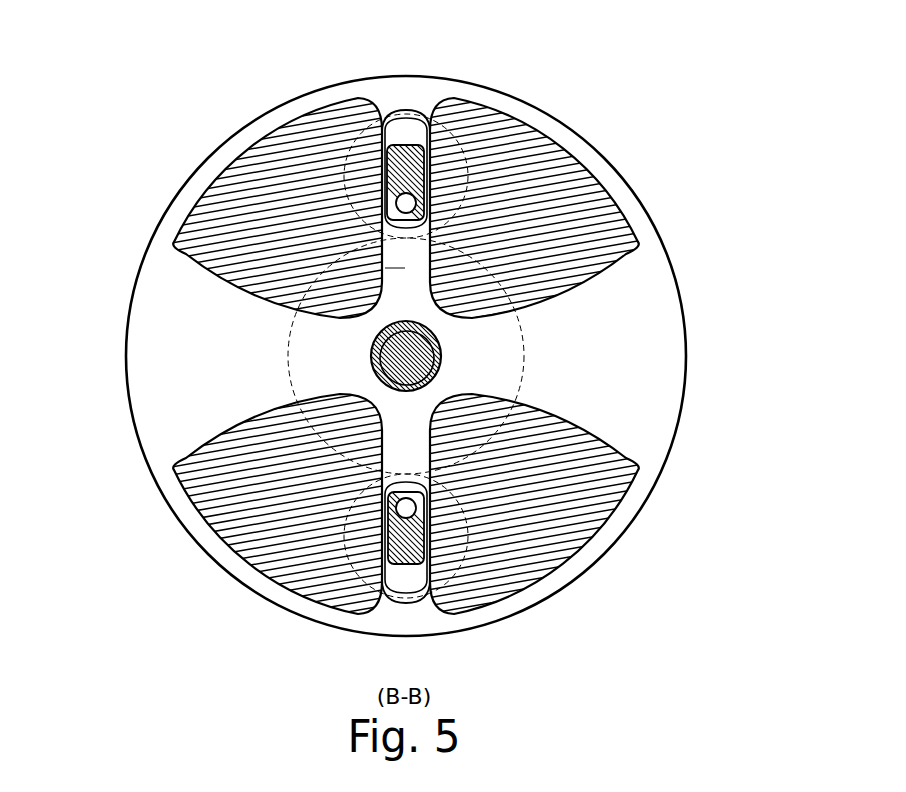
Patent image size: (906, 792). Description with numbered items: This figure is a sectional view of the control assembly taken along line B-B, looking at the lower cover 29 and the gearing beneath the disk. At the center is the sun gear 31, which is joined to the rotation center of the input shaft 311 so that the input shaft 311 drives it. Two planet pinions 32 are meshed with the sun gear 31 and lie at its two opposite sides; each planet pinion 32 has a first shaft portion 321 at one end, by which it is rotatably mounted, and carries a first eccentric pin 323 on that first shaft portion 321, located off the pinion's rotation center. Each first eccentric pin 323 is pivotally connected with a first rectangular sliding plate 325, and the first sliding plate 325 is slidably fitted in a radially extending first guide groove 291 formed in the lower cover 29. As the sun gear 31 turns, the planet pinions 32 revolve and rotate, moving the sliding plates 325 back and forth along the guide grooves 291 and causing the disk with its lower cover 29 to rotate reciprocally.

The lower cover 29 is at (577, 200).
The first guide groove 291 is at (323, 263).
The sun gear 31 is at (527, 354).
The input shaft 311 is at (395, 353).
The planet pinion 32 is at (413, 110).
The first shaft portion 321 is at (396, 110).
The first eccentric pin 323 is at (408, 202).
The first rectangular sliding plate 325 is at (380, 235).